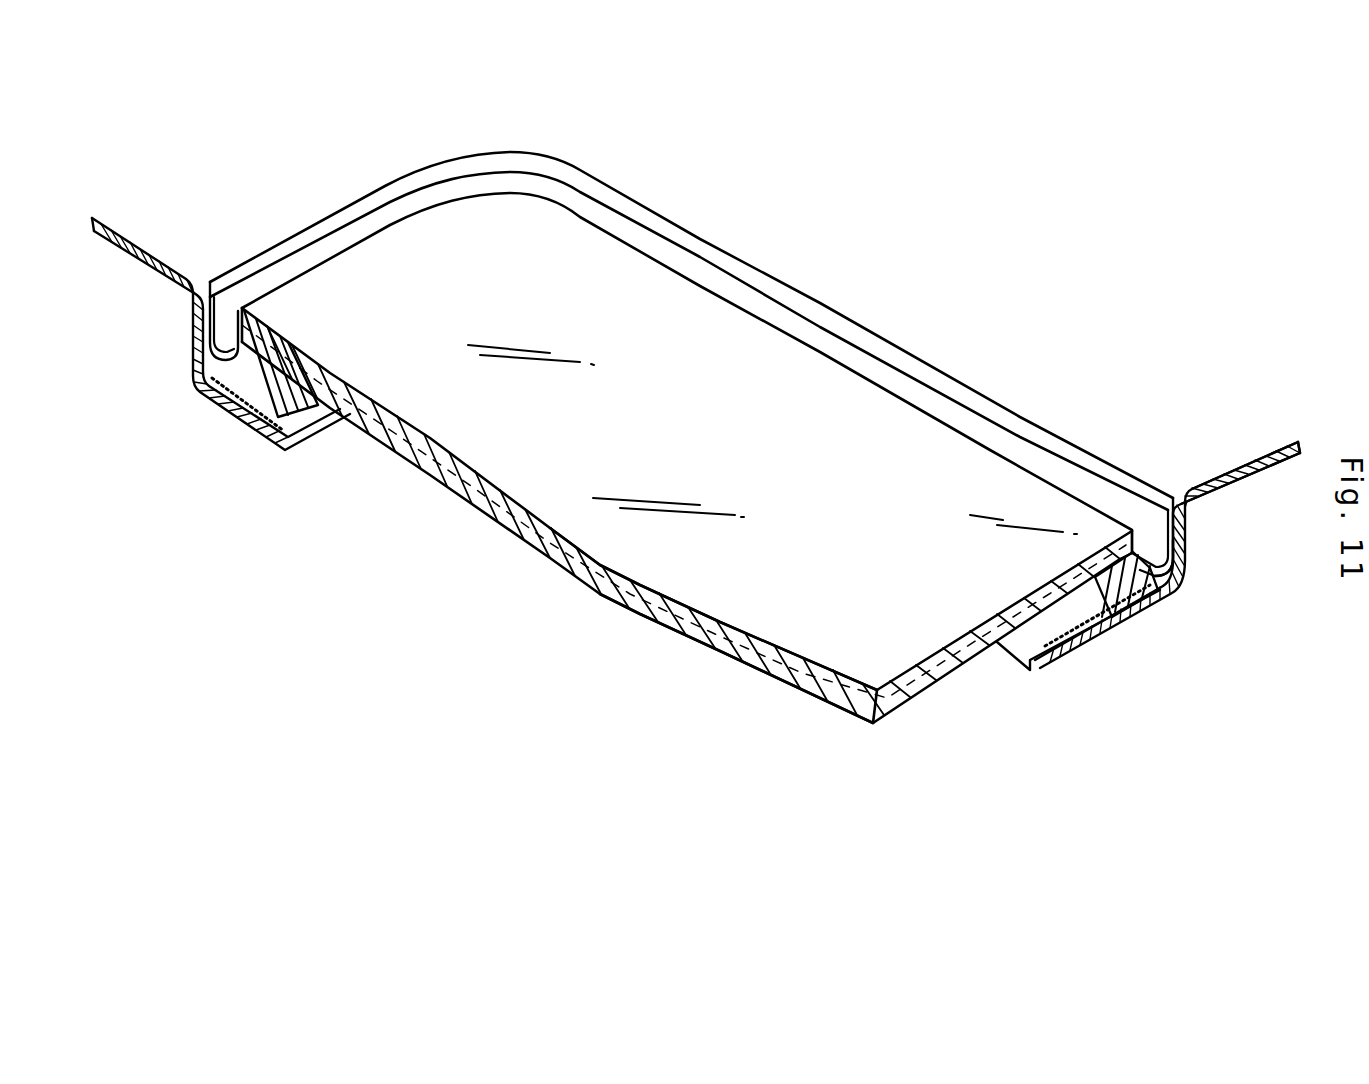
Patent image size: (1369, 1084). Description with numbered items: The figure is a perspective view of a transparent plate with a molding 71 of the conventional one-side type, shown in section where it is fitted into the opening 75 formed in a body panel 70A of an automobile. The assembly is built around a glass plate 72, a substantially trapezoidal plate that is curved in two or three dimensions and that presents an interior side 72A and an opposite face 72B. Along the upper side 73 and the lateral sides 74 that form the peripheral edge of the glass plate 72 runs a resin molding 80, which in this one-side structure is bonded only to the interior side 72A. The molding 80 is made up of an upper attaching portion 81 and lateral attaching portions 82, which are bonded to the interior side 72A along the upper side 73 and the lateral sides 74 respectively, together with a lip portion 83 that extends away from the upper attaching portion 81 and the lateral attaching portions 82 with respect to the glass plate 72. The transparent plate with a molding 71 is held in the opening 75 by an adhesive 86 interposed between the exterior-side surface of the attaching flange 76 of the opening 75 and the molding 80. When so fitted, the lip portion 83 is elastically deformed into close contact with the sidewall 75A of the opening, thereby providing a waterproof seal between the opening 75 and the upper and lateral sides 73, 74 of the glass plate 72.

The body panel 70A is at (1201, 457).
The transparent plate with a molding 71 is at (653, 231).
The glass plate 72 is at (652, 454).
The interior side 72A is at (720, 648).
The plate upper surface 72B is at (800, 615).
The upper side 73 is at (388, 232).
The lateral side 74 is at (713, 307).
The opening 75 is at (1146, 498).
The sidewall 75A is at (1190, 535).
The attaching flange 76 is at (1060, 640).
The resin molding 80 is at (1088, 556).
The upper attaching portion 81 is at (302, 384).
The lateral attaching portion 82 is at (1113, 622).
The lip portion 83 is at (268, 268).
The adhesive 86 is at (262, 418).